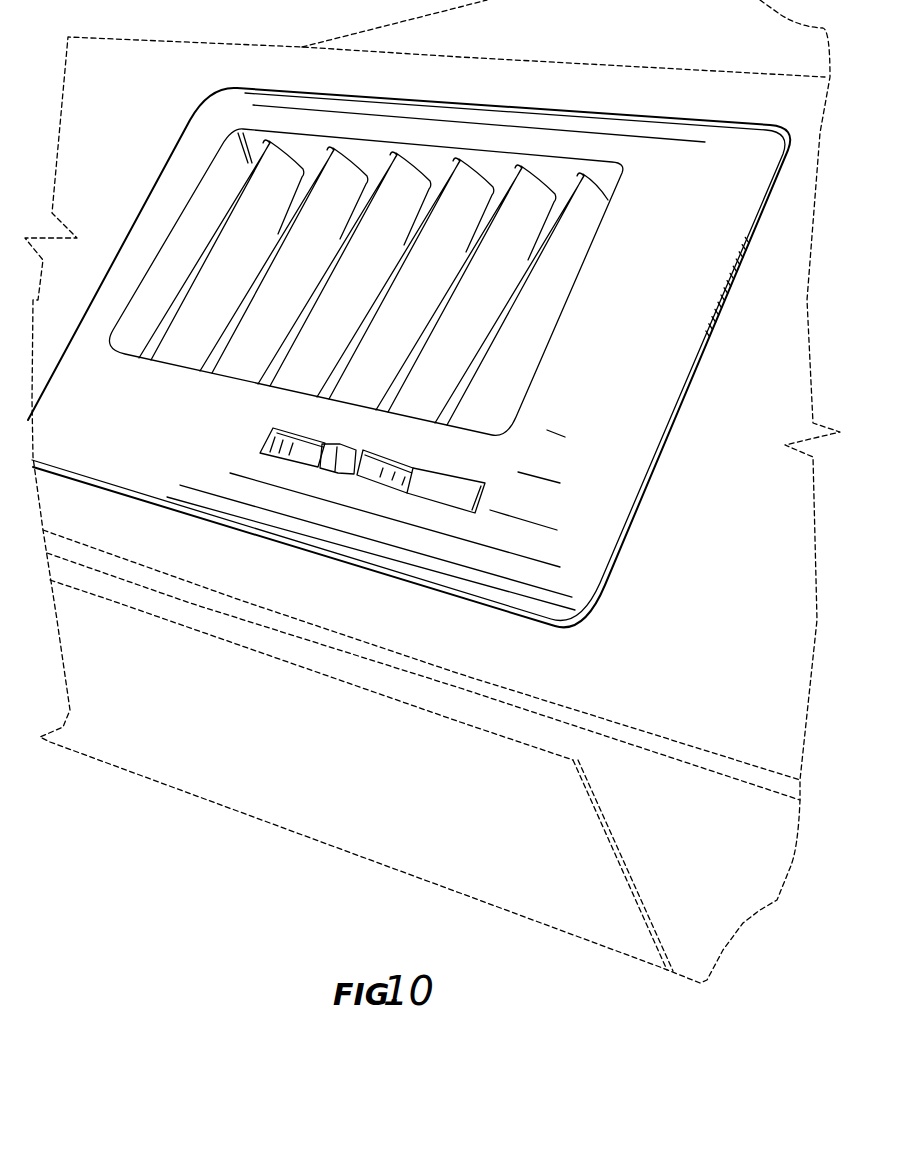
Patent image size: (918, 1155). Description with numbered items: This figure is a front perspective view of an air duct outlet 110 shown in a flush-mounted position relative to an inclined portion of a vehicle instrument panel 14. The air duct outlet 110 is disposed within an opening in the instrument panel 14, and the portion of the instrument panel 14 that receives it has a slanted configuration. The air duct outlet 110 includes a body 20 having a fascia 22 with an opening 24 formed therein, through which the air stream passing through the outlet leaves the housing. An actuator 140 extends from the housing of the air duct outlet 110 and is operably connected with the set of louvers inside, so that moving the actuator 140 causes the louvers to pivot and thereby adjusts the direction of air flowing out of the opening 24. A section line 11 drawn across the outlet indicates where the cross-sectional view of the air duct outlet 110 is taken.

The section line 11 is at (402, 93).
The instrument panel 14 is at (788, 227).
The body 20 is at (756, 137).
The fascia 22 is at (676, 199).
The opening 24 is at (213, 166).
The air duct outlet 110 is at (540, 100).
The actuator 140 is at (380, 477).